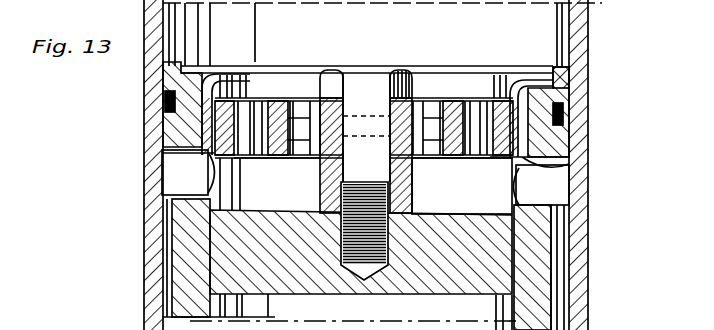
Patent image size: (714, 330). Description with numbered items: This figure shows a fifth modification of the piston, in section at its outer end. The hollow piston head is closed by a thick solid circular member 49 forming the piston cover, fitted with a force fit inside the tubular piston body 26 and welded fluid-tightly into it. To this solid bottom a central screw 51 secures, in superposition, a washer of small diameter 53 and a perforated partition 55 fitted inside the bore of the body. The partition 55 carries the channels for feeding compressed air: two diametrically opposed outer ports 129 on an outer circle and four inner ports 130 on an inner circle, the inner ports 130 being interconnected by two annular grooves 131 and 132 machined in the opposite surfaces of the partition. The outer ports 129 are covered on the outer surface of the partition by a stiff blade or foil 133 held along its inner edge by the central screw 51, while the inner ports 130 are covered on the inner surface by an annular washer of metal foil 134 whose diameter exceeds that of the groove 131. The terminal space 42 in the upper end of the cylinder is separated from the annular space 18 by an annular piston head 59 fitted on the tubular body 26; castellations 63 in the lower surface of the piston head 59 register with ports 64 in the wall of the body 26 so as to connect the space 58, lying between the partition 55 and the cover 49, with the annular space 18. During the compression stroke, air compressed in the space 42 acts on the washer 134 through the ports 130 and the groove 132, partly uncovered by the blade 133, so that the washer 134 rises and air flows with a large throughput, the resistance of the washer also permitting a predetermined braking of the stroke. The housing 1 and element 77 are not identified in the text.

The housing 1 is at (577, 41).
The annular space 18 is at (556, 242).
The tubular piston body 26 is at (551, 293).
The terminal space 42 is at (583, 62).
The solid circular member 49 is at (483, 283).
The central screw 51 is at (373, 80).
The washer of small diameter 53 is at (400, 190).
The perforated partition 55 is at (512, 98).
The space 58 is at (431, 212).
The annular piston head 59 is at (562, 91).
The castellations 63 is at (554, 190).
The ports 64 is at (573, 160).
The sealing ring 77 is at (583, 117).
The outer ports 129 is at (250, 108).
The inner ports 130 is at (302, 157).
The annular groove 131 is at (440, 150).
The annular groove 132 is at (433, 110).
The blade or foil 133 is at (448, 97).
The annular washer of metal foil 134 is at (285, 157).